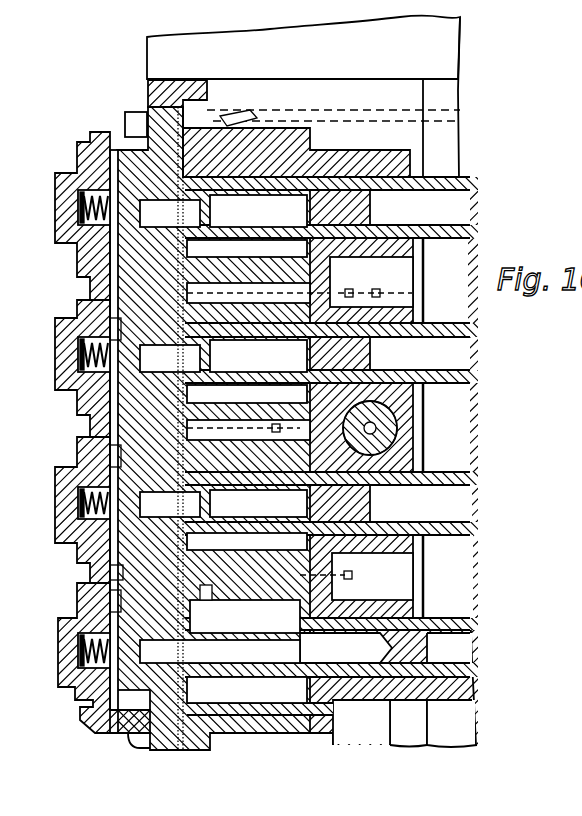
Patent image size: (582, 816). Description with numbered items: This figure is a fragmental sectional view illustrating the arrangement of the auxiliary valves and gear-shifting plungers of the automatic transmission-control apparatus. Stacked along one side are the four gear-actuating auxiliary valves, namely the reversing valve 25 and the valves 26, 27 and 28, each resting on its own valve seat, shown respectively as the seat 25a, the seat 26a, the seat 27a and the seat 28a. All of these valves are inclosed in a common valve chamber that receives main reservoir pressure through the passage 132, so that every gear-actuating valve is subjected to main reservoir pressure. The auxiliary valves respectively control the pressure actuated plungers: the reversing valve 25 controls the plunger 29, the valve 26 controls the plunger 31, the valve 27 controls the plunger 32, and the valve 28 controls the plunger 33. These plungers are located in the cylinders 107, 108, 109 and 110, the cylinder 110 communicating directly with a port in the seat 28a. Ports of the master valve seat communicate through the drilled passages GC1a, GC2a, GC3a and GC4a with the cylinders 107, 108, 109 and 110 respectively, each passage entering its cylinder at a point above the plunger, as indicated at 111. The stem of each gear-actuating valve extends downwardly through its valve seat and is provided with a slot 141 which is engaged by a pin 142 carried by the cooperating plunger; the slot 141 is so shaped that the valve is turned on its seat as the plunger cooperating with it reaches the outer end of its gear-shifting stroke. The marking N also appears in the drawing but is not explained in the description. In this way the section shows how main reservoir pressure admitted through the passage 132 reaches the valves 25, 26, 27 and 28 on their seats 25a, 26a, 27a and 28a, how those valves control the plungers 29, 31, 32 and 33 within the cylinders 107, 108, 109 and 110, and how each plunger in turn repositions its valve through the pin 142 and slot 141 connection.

The valve seat 28a is at (143, 145).
The passage 132 is at (217, 122).
The auxiliary valve 28 is at (127, 253).
The valve seat 27a is at (123, 330).
The auxiliary valve 27 is at (115, 400).
The valve seat 26a is at (120, 457).
The auxiliary valve 26 is at (120, 548).
The nut N is at (120, 572).
The valve seat 25a is at (117, 602).
The reversing valve 25 is at (110, 700).
The cylinder 110 is at (223, 226).
The cylinder 109 is at (223, 371).
The cylinder 108 is at (223, 520).
The cylinder 107 is at (247, 690).
The passage connection point 111 is at (205, 600).
The slot 141 is at (232, 636).
The pin 142 is at (295, 647).
The pressure actuated plunger 33 is at (440, 228).
The pressure actuated plunger 32 is at (445, 378).
The pressure actuated plunger 31 is at (440, 535).
The pressure actuated plunger 29 is at (363, 703).
The drilled passage GC4a is at (360, 292).
The drilled passage GC3a is at (375, 299).
The drilled passage GC2a is at (251, 430).
The drilled passage GC1a is at (352, 575).